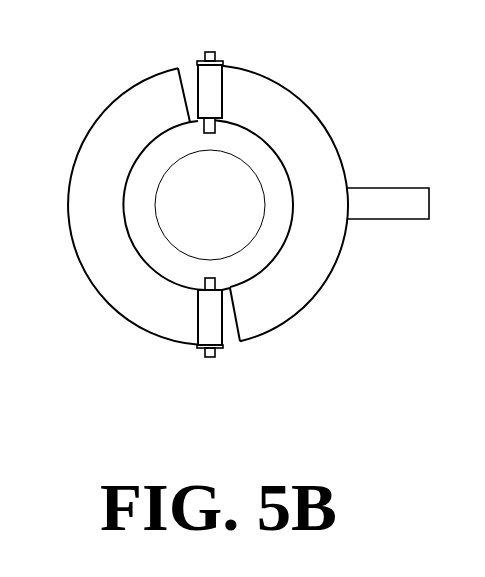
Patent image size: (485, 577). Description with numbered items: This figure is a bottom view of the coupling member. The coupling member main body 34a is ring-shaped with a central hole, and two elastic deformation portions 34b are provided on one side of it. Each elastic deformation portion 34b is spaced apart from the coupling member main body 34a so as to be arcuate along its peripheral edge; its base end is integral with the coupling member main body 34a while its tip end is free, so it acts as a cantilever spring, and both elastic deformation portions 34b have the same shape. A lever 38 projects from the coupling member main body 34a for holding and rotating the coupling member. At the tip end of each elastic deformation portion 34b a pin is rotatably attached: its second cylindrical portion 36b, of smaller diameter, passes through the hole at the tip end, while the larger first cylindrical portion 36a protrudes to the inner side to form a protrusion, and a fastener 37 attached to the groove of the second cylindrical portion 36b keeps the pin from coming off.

The coupling member main body 34a is at (265, 242).
The elastic deformation portion 34b is at (307, 118).
The first cylindrical portion 36a is at (215, 128).
The second cylindrical portion 36b is at (207, 55).
The fastener 37 is at (218, 60).
The lever 38 is at (408, 200).